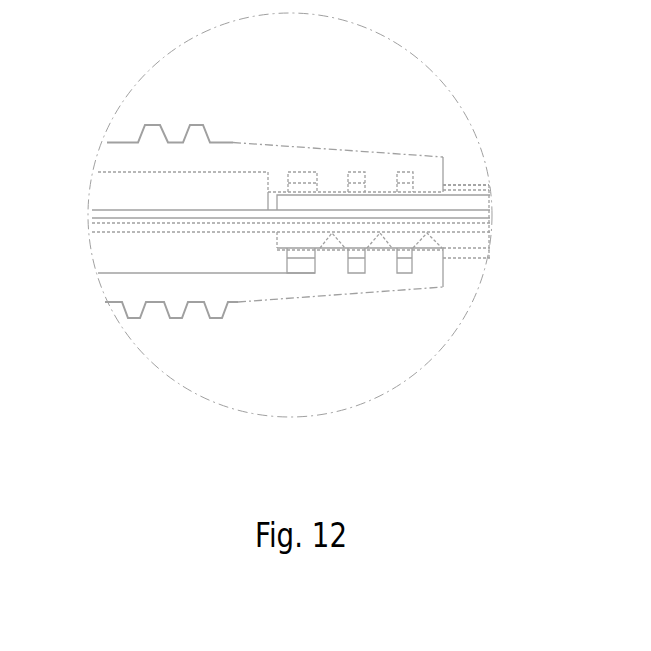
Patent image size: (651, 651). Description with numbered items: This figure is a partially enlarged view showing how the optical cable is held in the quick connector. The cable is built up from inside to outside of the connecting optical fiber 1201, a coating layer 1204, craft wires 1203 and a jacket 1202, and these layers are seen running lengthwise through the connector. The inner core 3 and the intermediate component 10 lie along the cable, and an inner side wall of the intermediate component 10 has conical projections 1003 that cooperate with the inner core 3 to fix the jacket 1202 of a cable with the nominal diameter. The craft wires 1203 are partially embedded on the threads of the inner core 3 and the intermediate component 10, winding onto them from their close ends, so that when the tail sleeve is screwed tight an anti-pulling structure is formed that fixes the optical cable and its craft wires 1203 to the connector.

The inner core 3 is at (243, 153).
The intermediate component 10 is at (425, 280).
The conical projections 1003 is at (422, 235).
The connecting optical fiber 1201 is at (115, 222).
The jacket 1202 is at (465, 185).
The craft wires 1203 is at (282, 247).
The coating layer 1204 is at (250, 232).